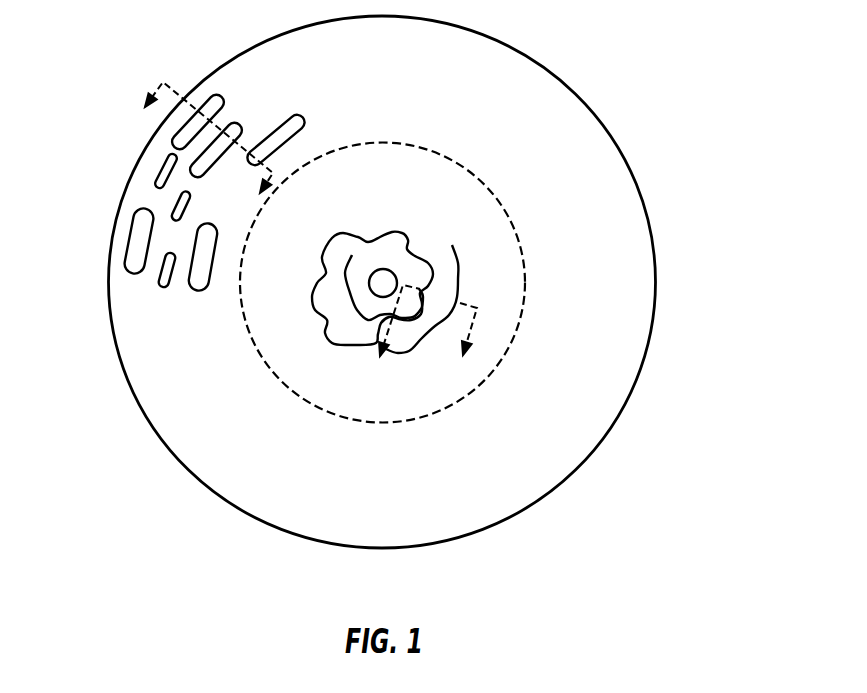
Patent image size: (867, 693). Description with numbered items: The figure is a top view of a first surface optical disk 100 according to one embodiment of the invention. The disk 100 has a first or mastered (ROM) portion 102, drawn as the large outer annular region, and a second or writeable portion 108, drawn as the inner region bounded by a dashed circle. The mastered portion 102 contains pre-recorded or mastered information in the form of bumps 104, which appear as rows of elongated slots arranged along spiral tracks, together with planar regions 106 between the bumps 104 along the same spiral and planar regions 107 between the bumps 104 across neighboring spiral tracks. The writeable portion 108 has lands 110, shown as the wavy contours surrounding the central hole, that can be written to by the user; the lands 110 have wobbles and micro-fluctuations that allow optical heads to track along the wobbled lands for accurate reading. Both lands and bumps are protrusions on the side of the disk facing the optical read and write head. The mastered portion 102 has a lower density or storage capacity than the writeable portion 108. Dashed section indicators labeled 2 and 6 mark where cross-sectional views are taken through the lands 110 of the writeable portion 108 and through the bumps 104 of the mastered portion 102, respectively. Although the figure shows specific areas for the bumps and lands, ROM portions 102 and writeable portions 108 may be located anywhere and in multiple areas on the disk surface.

The first surface optical disk 100 is at (375, 282).
The mastered (ROM) portion 102 is at (404, 82).
The bumps 104 is at (170, 228).
The planar regions 106 is at (152, 201).
The planar regions 107 is at (148, 280).
The writeable portion 108 is at (405, 197).
The lands 110 is at (403, 232).
The section line 2- 2 is at (423, 342).
The section line 6- 6 is at (201, 155).